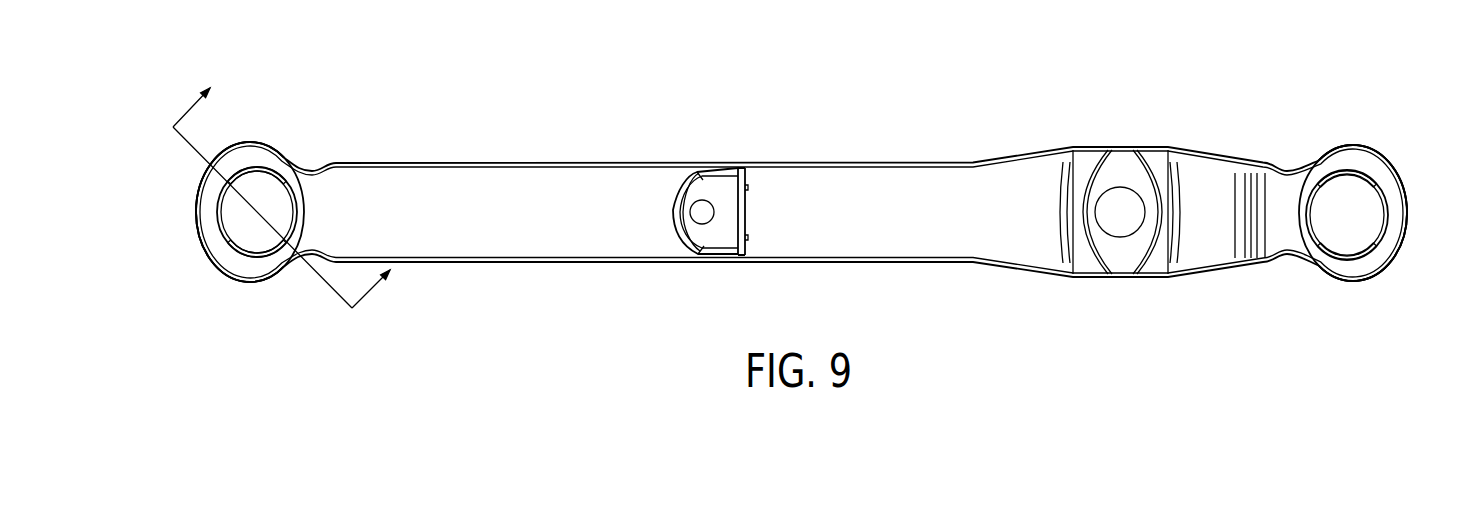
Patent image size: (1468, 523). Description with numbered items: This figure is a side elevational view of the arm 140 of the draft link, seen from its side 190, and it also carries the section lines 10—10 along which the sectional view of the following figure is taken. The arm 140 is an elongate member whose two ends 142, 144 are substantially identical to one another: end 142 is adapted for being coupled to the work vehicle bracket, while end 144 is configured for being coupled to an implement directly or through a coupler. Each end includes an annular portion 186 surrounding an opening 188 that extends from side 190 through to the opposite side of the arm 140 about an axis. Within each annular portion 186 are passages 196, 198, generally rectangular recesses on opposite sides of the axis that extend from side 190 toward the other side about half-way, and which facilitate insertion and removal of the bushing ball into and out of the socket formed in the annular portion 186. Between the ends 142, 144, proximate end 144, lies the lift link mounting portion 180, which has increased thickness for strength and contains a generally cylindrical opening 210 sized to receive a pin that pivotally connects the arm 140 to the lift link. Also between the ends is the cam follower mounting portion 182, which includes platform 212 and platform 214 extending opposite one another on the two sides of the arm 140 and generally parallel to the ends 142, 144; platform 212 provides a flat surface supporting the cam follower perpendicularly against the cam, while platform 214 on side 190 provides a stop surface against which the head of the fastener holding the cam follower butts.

The section lines 10— 10 is at (280, 201).
The arm 140 is at (920, 95).
The end 142 is at (273, 137).
The end 144 is at (1342, 287).
The lift link mounting portion 180 is at (1160, 135).
The cam follower mounting portion 182 is at (735, 157).
The annular portion 186 is at (232, 147).
The opening 188 is at (221, 217).
The side 190 is at (503, 200).
The passage 196 is at (258, 256).
The passage 198 is at (257, 168).
The opening 210 is at (1120, 240).
The platform 212 is at (698, 227).
The platform 214 is at (685, 175).